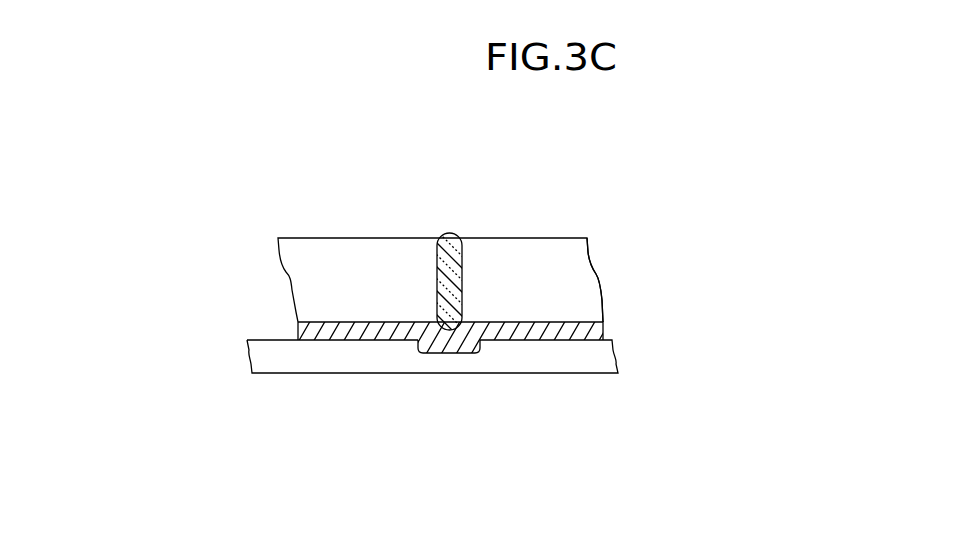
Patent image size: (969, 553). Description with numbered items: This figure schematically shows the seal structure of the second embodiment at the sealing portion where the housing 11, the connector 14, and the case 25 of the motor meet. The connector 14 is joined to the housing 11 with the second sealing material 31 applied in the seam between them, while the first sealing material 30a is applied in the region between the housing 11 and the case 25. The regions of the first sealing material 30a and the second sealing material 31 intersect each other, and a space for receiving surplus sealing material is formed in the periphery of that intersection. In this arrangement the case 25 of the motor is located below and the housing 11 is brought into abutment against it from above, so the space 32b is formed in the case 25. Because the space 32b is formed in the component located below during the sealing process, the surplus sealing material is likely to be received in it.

The housing 11 is at (593, 280).
The connector 14 is at (278, 253).
The second sealing material 31 is at (452, 233).
The first sealing material 30a is at (297, 340).
The space 32b is at (420, 349).
The case 25 is at (595, 377).